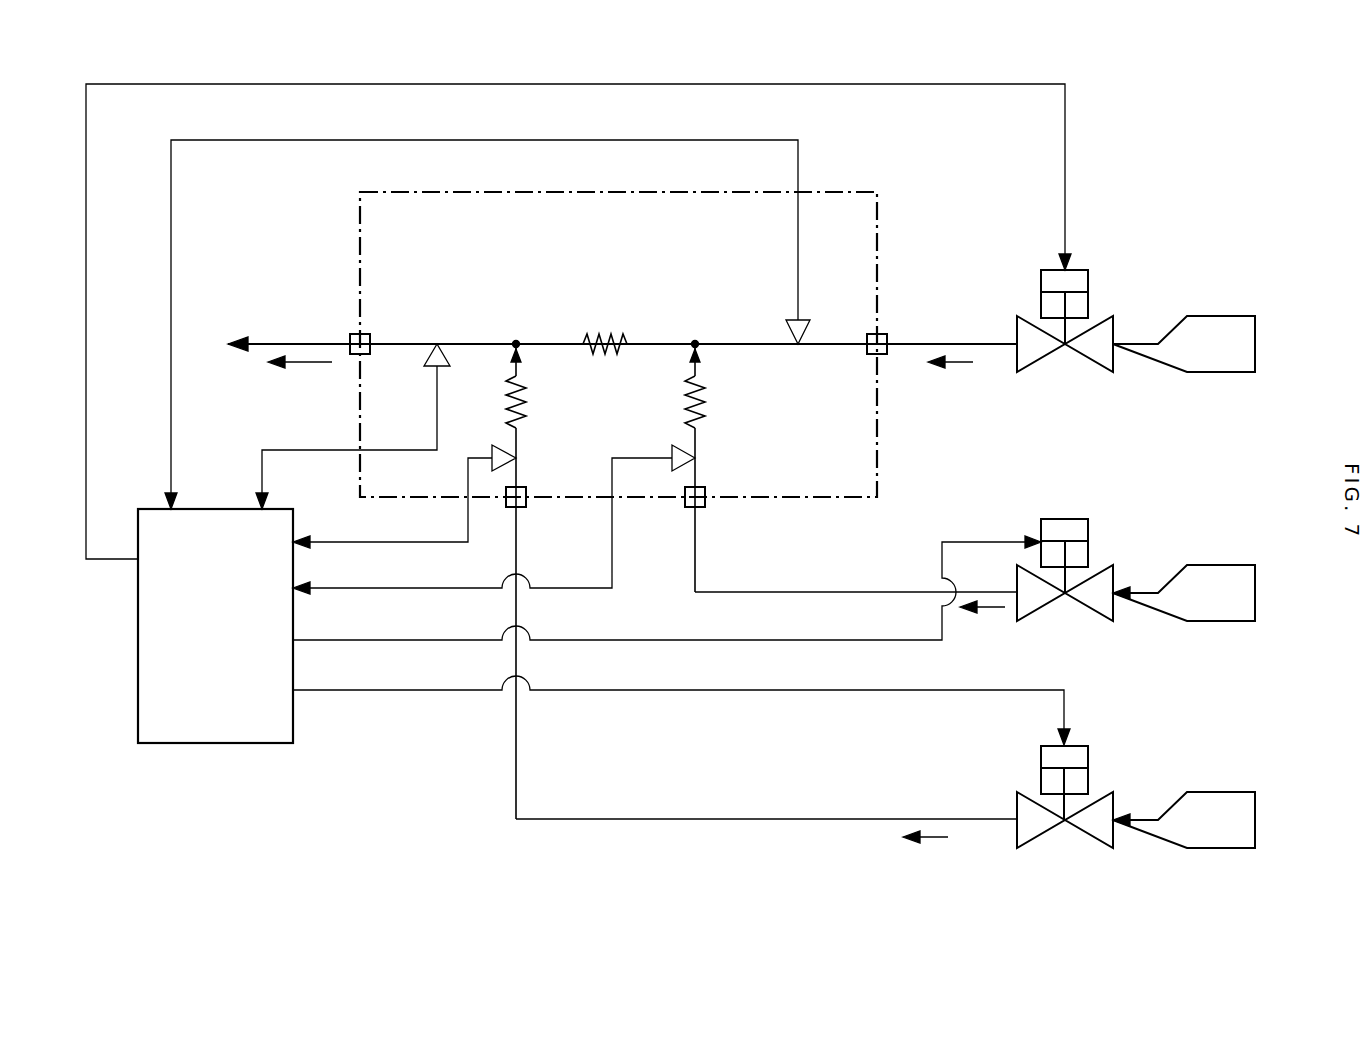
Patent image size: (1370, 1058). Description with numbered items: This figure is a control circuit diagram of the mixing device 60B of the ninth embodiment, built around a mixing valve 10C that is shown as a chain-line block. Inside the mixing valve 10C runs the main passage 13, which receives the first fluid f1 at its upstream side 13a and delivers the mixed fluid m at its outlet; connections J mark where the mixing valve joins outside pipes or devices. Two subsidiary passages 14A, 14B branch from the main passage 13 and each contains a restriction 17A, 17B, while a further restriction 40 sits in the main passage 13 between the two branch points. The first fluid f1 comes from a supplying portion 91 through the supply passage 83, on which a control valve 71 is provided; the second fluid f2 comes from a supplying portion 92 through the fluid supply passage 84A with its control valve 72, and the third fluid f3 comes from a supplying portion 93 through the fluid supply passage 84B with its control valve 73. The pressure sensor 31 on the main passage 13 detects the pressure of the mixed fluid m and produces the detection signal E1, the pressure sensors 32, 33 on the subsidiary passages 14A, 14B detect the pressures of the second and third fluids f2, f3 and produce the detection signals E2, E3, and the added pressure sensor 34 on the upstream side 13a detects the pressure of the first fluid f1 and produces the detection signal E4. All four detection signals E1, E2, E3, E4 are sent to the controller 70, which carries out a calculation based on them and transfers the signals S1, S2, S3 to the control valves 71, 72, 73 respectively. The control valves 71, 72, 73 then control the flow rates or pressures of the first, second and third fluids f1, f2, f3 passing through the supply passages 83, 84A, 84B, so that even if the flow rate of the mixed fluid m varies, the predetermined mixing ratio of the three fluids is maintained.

The mixing valve 10C is at (882, 190).
The mixing device 60B is at (1100, 168).
The main passage 13 is at (745, 340).
The upstream side of the main passage 13a is at (870, 355).
The connection J is at (368, 338).
The pressure sensor 31 is at (437, 340).
The pressure sensor 32 is at (700, 458).
The pressure sensor 33 is at (520, 458).
The pressure sensor 34 is at (805, 327).
The orifice 40 is at (600, 340).
The subsidiary passage 14A is at (697, 355).
The subsidiary passage 14B is at (520, 352).
The orifice 17A is at (708, 400).
The orifice 17B is at (527, 400).
The controller 70 is at (232, 632).
The control valve 71 is at (1080, 276).
The control valve 72 is at (1080, 528).
The control valve 73 is at (1080, 752).
The supply passage 83 is at (948, 340).
The fluid supply passage 84A is at (822, 590).
The fluid supply passage 84B is at (695, 816).
The supplying portion 91 is at (1237, 316).
The supplying portion 92 is at (1237, 565).
The supplying portion 93 is at (1237, 792).
The detection signal E1 is at (310, 455).
The detection signal E2 is at (585, 592).
The detection signal E3 is at (395, 545).
The detection signal E4 is at (171, 228).
The signal S1 is at (86, 355).
The signal S2 is at (735, 643).
The signal S3 is at (840, 693).
The first fluid f1 is at (958, 368).
The second fluid f2 is at (995, 613).
The third fluid f3 is at (935, 843).
The mixed fluid m is at (303, 368).